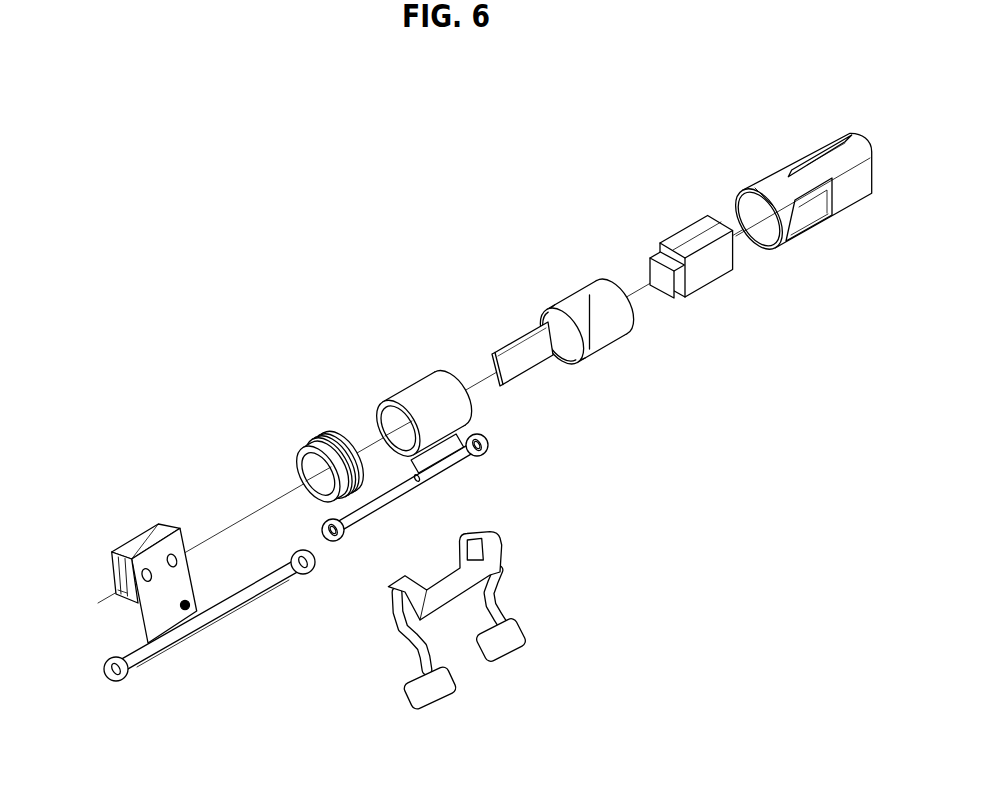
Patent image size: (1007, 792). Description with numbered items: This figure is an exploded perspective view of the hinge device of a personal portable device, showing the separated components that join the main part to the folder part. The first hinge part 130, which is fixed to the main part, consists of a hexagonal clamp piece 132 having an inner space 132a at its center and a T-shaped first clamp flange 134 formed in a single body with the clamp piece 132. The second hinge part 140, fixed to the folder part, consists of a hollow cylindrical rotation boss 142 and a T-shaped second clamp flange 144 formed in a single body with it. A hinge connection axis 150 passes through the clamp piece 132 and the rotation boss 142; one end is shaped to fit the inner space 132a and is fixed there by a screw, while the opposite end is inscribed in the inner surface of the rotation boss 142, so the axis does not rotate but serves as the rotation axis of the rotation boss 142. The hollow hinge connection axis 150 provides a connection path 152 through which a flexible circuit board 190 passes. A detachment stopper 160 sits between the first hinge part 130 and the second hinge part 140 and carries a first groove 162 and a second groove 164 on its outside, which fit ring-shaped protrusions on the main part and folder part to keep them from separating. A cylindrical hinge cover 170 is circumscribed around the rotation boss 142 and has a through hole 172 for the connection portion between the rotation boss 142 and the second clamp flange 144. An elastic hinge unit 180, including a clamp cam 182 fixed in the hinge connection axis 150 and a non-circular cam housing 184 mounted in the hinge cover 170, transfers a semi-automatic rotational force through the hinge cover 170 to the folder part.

The first hinge part 130 is at (168, 584).
The clamp piece 132 is at (109, 544).
The inner space 132a is at (123, 575).
The first clamp flange 134 is at (177, 637).
The second hinge part 140 is at (478, 418).
The rotation boss 142 is at (422, 390).
The second clamp flange 144 is at (455, 458).
The hinge connection axis 150 is at (577, 304).
The connection path 152 is at (588, 335).
The detachment stopper 160 is at (306, 411).
The first groove 162 is at (299, 440).
The second groove 164 is at (352, 447).
The hinge cover 170 is at (799, 191).
The through hole 172 is at (802, 215).
The elastic hinge unit 180 is at (680, 243).
The clamp cam 182 is at (667, 295).
The cam housing 184 is at (717, 277).
The flexible circuit board 190 is at (508, 647).